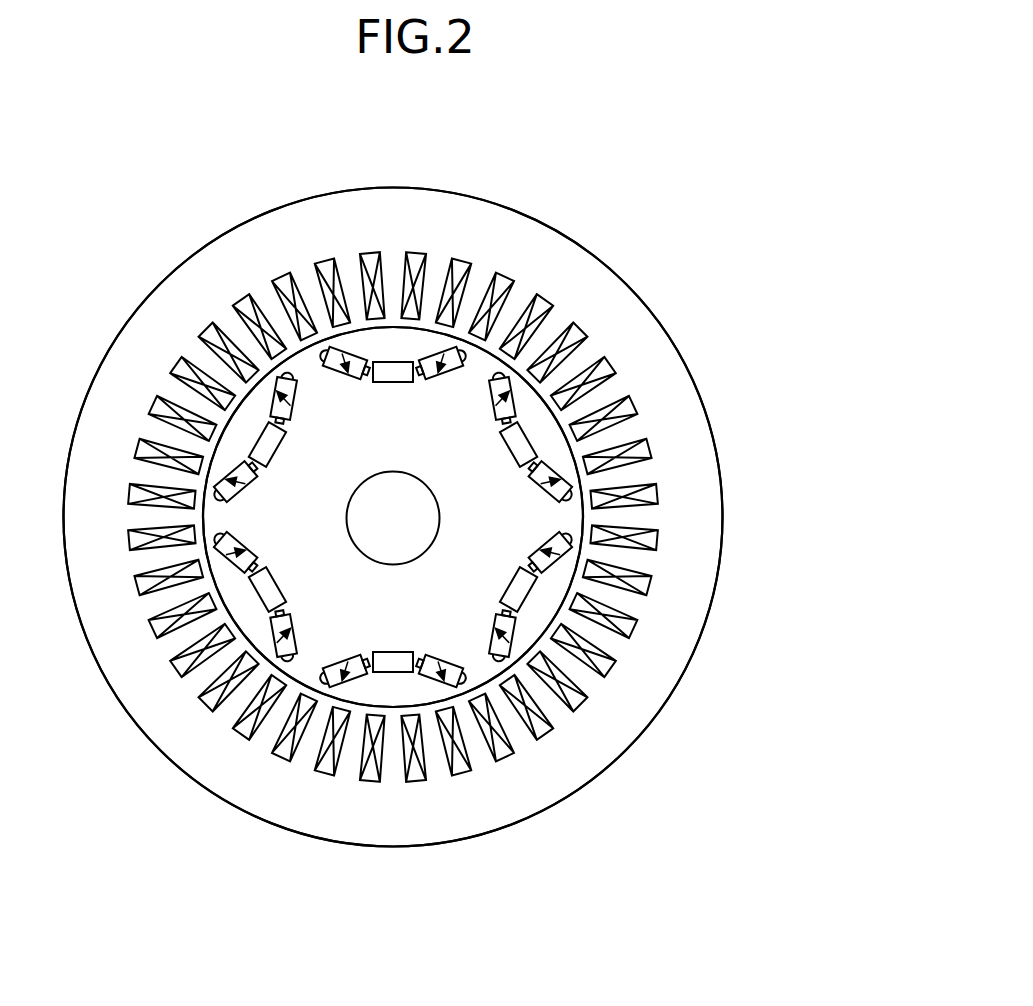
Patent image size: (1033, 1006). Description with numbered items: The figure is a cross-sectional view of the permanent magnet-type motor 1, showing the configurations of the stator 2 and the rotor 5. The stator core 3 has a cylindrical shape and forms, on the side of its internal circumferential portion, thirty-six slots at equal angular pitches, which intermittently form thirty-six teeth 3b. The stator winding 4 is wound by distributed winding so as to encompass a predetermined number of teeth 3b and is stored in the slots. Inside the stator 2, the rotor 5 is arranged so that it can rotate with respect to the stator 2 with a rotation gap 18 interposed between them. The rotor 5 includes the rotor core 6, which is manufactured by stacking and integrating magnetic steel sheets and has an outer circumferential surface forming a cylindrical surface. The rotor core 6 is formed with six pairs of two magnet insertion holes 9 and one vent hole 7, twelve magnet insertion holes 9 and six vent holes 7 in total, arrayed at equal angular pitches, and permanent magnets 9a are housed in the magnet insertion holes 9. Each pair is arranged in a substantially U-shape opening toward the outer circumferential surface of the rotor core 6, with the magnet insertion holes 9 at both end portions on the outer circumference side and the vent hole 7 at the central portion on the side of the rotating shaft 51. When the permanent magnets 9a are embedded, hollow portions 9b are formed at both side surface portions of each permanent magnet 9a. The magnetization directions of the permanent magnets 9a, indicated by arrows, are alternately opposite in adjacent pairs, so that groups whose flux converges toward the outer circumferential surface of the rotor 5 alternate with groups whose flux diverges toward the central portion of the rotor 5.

The permanent magnet-type motor 1 is at (630, 187).
The stator 2 is at (648, 267).
The stator core 3 is at (675, 455).
The teeth 3b is at (638, 477).
The stator winding 4 is at (647, 497).
The rotor 5 is at (324, 401).
The rotor core 6 is at (475, 655).
The vent hole 7 is at (268, 446).
The magnet insertion holes 9 is at (486, 400).
The permanent magnets 9a is at (502, 420).
The hollow portions 9b is at (217, 534).
The rotation gap 18 is at (613, 633).
The rotating shaft 51 is at (395, 489).